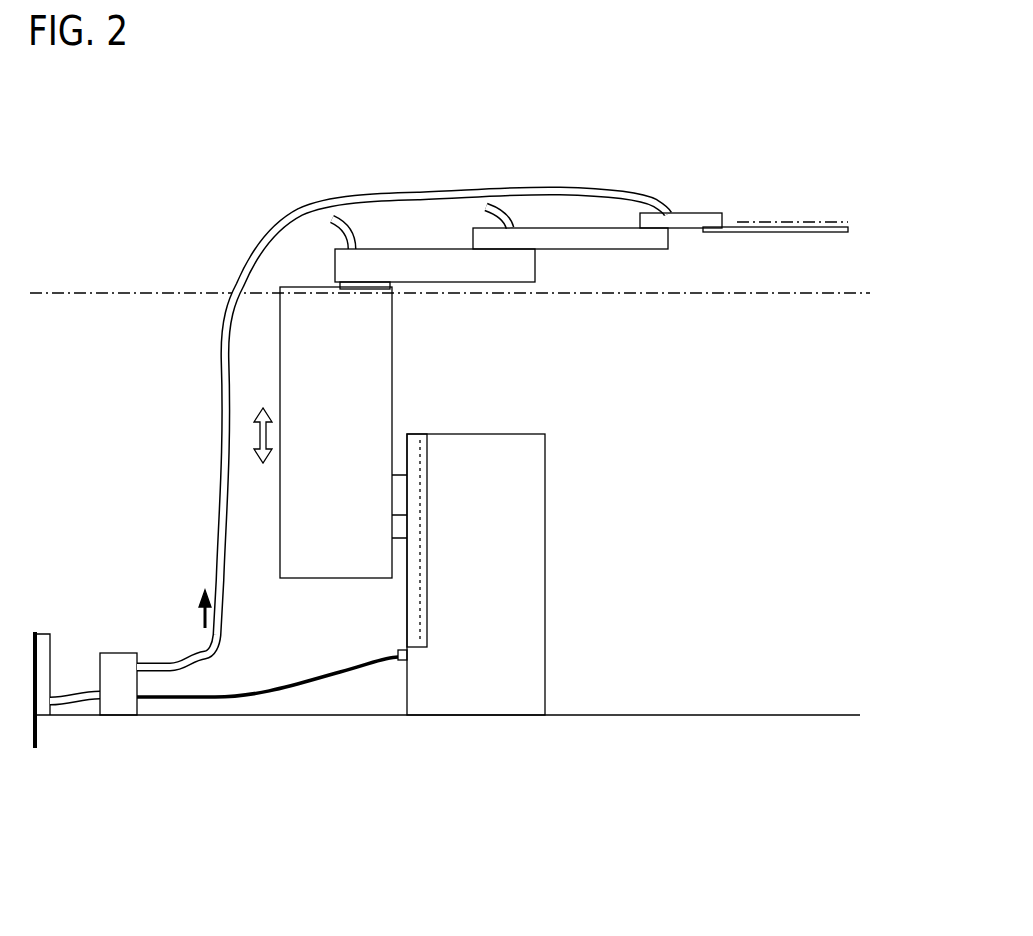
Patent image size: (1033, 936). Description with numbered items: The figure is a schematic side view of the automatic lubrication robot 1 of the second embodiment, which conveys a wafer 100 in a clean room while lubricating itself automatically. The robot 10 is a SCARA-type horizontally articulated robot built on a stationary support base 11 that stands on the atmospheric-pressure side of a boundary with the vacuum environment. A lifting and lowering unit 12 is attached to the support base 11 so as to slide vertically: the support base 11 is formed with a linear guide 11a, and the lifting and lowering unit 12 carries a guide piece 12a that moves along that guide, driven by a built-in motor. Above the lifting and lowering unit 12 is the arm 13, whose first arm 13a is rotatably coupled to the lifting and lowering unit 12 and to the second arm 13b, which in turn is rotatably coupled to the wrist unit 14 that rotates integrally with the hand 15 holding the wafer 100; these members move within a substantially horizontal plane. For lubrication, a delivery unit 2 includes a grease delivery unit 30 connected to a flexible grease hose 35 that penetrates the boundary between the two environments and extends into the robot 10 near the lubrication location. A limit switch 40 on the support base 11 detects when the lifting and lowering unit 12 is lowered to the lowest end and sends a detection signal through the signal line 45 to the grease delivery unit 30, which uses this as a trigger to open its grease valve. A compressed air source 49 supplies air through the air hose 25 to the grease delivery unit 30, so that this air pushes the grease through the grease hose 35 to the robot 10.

The automatic lubrication robot 1 is at (86, 164).
The delivery unit 2 is at (187, 800).
The robot 10 is at (508, 464).
The support base 11 is at (527, 649).
The linear guide 11a is at (418, 437).
The lifting and lowering unit 12 is at (290, 337).
The guide piece 12a is at (435, 495).
The arm 13 is at (603, 327).
The first arm 13a is at (498, 283).
The second arm 13b is at (610, 249).
The wrist unit 14 is at (690, 229).
The hand 15 is at (760, 233).
The air hose 25 is at (75, 693).
The grease delivery unit 30 is at (123, 658).
The grease hose 35 is at (218, 487).
The limit switch 40 is at (402, 660).
The signal line 45 is at (333, 678).
The compressed air source 49 is at (42, 715).
The wafer 100 is at (792, 220).